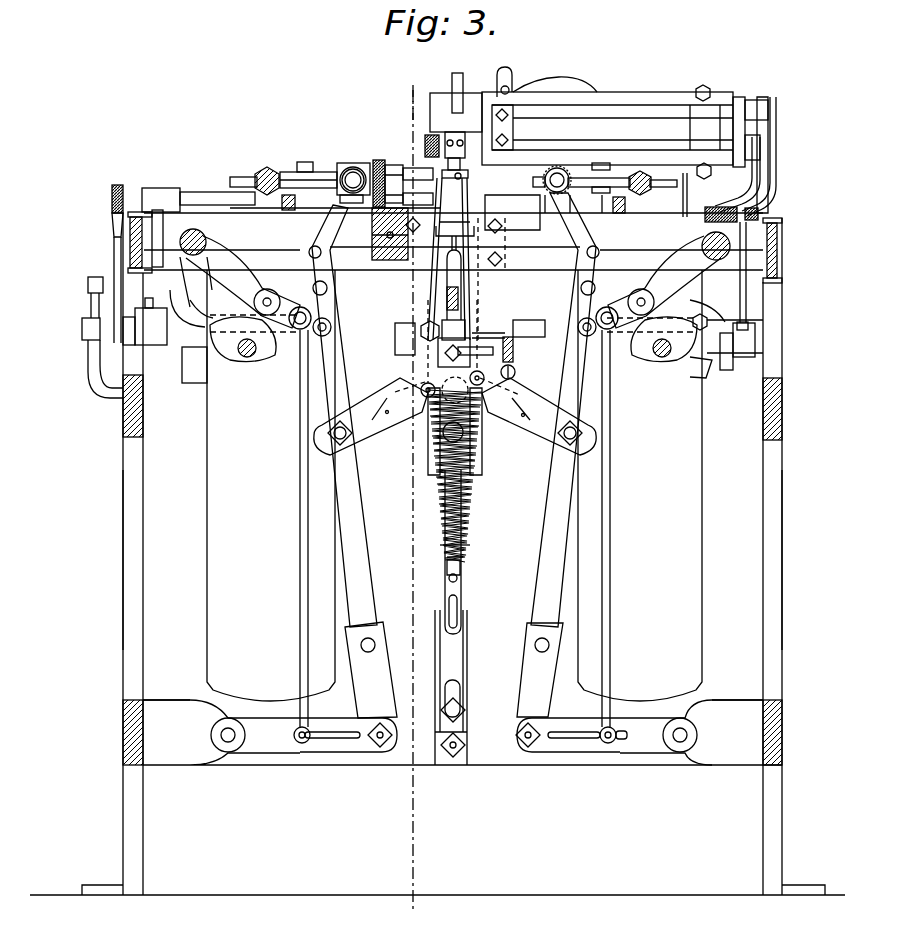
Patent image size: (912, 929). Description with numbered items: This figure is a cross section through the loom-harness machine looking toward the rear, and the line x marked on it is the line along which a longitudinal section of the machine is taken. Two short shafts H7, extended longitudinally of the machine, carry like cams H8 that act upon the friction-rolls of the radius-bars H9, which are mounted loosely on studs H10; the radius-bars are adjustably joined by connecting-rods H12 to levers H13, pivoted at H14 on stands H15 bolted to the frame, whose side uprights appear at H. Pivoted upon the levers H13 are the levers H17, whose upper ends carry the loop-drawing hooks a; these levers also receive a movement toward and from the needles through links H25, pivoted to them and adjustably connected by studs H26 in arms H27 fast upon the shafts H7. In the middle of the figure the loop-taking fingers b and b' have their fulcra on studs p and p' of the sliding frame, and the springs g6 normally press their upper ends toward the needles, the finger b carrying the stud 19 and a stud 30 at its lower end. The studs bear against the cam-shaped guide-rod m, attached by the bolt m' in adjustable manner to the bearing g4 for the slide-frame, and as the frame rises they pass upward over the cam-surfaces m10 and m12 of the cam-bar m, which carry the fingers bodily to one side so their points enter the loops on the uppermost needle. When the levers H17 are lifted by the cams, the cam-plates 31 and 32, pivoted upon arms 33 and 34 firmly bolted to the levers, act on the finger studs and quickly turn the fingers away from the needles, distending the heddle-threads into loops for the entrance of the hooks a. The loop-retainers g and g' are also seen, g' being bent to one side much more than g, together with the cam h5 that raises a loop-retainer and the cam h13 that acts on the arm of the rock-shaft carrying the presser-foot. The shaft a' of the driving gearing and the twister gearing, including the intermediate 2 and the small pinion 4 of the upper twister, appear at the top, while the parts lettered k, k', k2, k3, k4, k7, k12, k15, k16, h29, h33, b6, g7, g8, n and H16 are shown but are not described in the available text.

The valve body k is at (453, 136).
The valve stem k' is at (454, 83).
The piston k16 is at (498, 107).
The cylinder k3 is at (660, 87).
The cylinder cap k15 is at (566, 88).
The piston rod k7 is at (623, 131).
The cylinder head k2 is at (658, 127).
The cylinder end plate k4 is at (767, 152).
The pipe h33 is at (740, 198).
The pipe k12 is at (757, 194).
The pipe union h29 is at (758, 211).
The cam h13 is at (700, 358).
The cam h5 is at (727, 370).
The loop-taking finger b is at (440, 259).
The slide block b6 is at (443, 297).
The loop-taking finger b' is at (465, 207).
The loop-retainer g' is at (484, 214).
The loop-drawing hooks a is at (512, 204).
The stud p is at (431, 341).
The stud p' is at (508, 343).
The shaft a' is at (453, 266).
The levers H17 is at (556, 525).
The levers H13 is at (260, 722).
The connecting-rods H12 is at (301, 509).
The frame H is at (793, 561).
The studs H10 is at (206, 241).
The radius-bars H9 is at (453, 282).
The arms H27 is at (181, 299).
The studs H26 is at (197, 337).
The cams H8 is at (453, 339).
The shafts H7 is at (247, 358).
The links H25 is at (286, 345).
The stands H15 is at (453, 723).
The pivots H14 is at (228, 745).
The link bar H16 is at (528, 748).
The bearing g4 is at (468, 712).
The bolt m' is at (468, 701).
The loop-retainer g is at (436, 552).
The springs g6 is at (458, 541).
The pin g7 is at (448, 578).
The rod end g8 is at (460, 589).
The cam-shaped guide-rod m is at (471, 568).
The stud 30 is at (479, 468).
The cam-surface m10 is at (435, 492).
The cam-surface m12 is at (481, 450).
The arm 33 is at (349, 433).
The cam-plate 31 is at (371, 416).
The arm 34 is at (560, 430).
The cam-plate 32 is at (518, 403).
The stud 19 is at (457, 351).
The section line x is at (410, 95).
The bearing n is at (346, 164).
The pinion 4 is at (383, 185).
The intermediate 2 is at (395, 210).